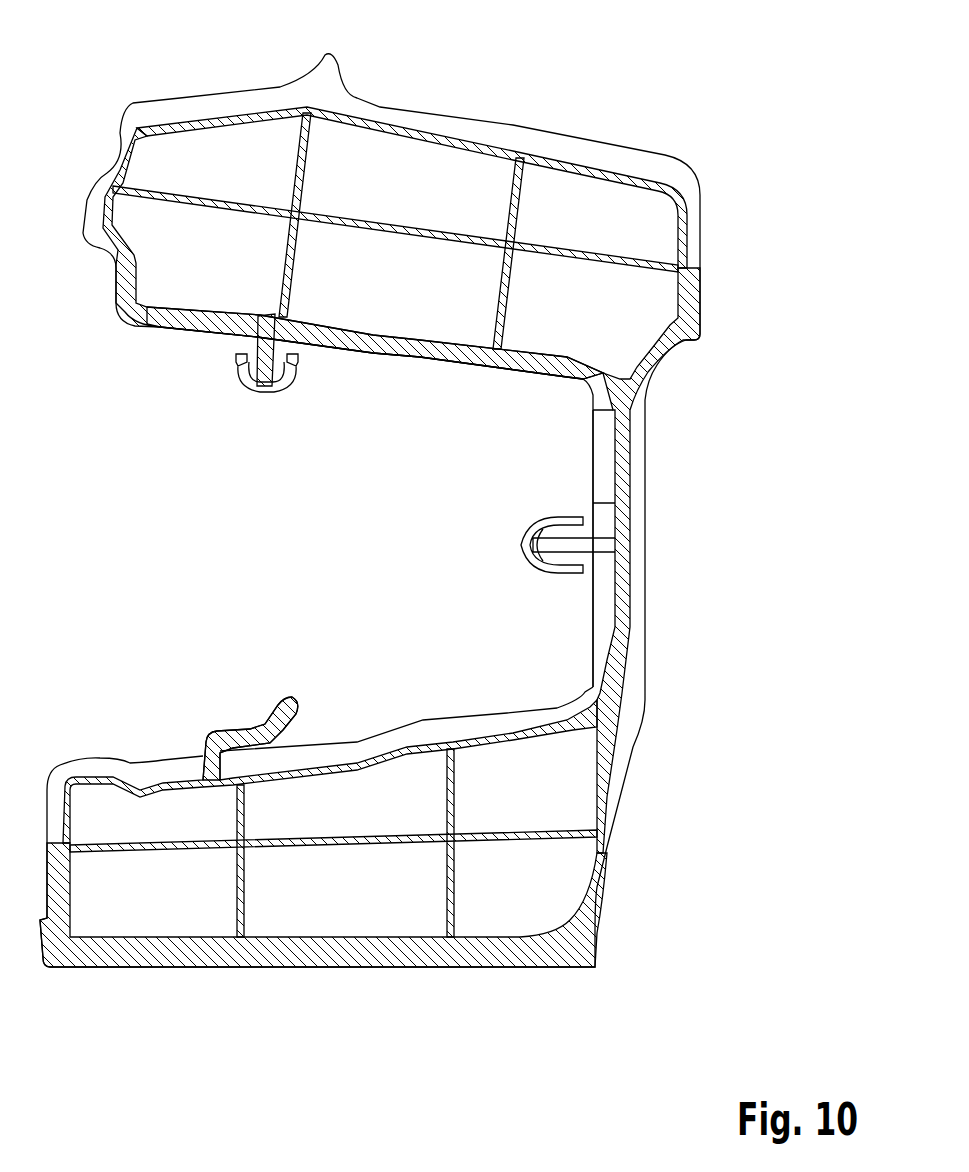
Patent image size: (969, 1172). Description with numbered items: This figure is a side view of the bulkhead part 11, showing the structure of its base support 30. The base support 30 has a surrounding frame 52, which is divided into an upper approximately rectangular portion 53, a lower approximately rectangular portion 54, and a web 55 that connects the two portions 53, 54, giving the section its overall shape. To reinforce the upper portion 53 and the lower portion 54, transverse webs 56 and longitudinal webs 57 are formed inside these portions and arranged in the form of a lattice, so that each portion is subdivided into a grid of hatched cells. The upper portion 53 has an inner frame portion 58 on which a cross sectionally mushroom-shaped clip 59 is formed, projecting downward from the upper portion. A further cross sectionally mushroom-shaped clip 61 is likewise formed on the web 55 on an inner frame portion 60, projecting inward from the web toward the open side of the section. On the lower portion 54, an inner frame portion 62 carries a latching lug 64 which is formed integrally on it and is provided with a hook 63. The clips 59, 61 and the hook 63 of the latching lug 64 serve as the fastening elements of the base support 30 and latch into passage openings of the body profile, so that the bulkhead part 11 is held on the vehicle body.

The bulkhead part 11 is at (448, 540).
The base support 30 is at (448, 540).
The frame 52 is at (448, 540).
The upper portion 53 is at (395, 238).
The lower portion 54 is at (323, 850).
The web 55 is at (632, 560).
The transverse web 56 is at (170, 1003).
The longitudinal web 57 is at (400, 985).
The inner frame portion 58 is at (430, 360).
The clip 59 is at (262, 388).
The inner frame portion 60 is at (592, 623).
The clip 61 is at (530, 543).
The inner frame portion 62 is at (110, 767).
The hook 63 is at (261, 702).
The latching lug 64 is at (261, 702).